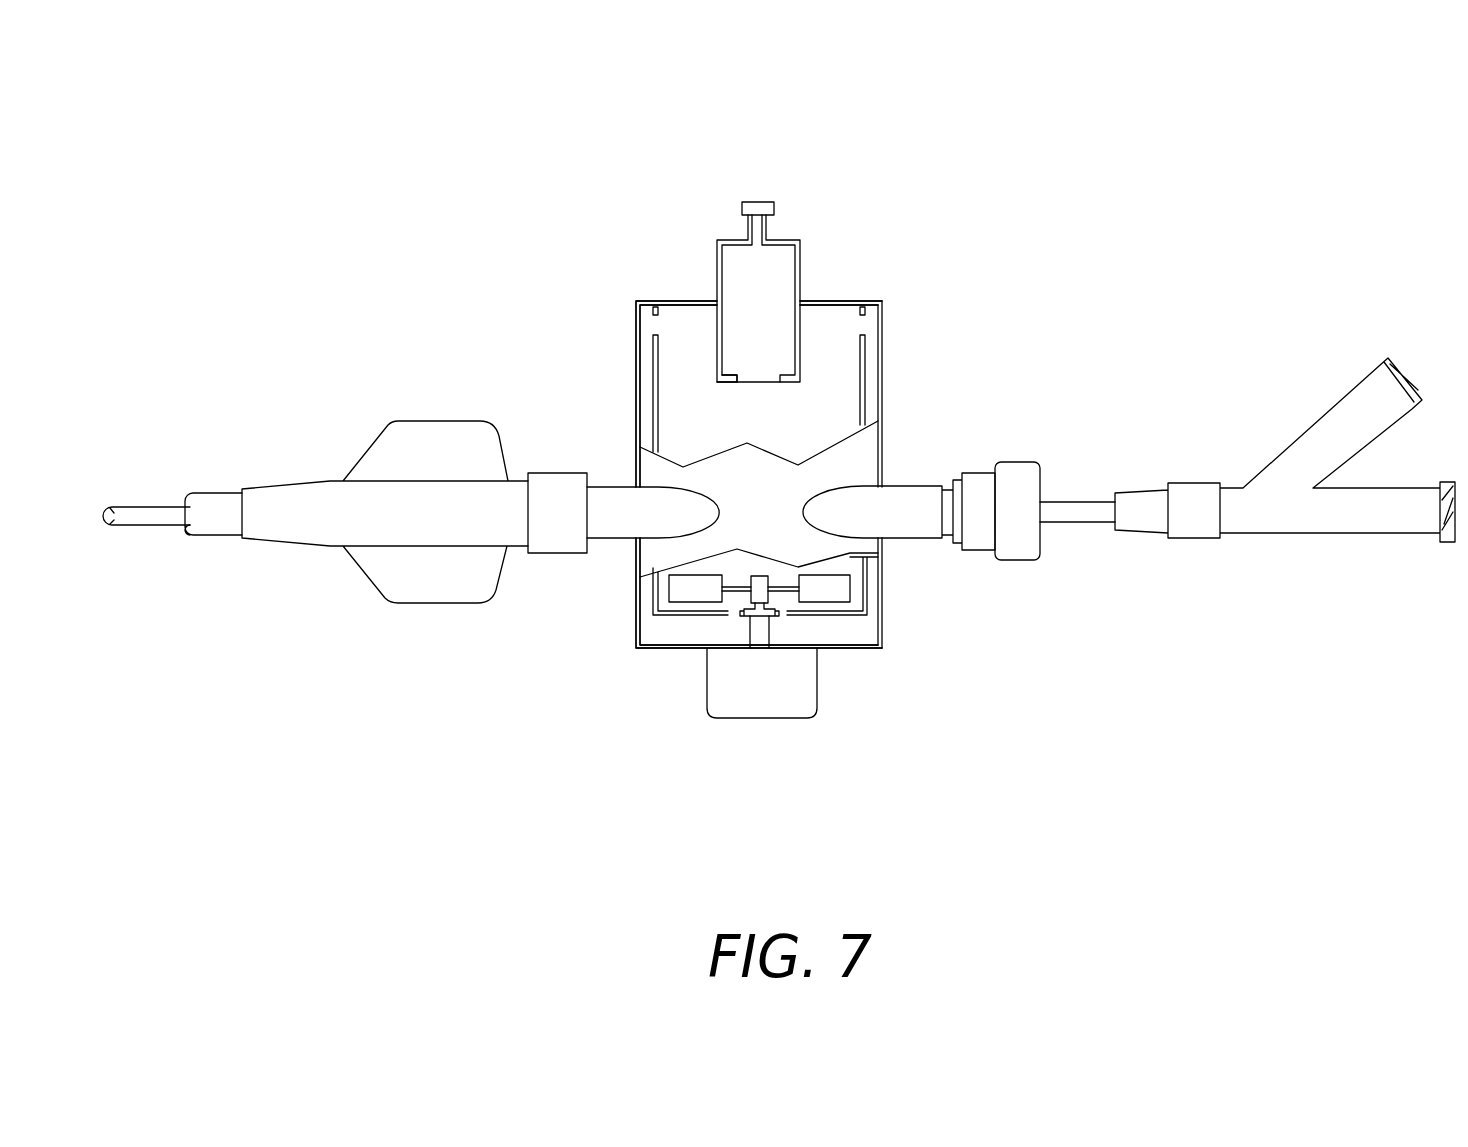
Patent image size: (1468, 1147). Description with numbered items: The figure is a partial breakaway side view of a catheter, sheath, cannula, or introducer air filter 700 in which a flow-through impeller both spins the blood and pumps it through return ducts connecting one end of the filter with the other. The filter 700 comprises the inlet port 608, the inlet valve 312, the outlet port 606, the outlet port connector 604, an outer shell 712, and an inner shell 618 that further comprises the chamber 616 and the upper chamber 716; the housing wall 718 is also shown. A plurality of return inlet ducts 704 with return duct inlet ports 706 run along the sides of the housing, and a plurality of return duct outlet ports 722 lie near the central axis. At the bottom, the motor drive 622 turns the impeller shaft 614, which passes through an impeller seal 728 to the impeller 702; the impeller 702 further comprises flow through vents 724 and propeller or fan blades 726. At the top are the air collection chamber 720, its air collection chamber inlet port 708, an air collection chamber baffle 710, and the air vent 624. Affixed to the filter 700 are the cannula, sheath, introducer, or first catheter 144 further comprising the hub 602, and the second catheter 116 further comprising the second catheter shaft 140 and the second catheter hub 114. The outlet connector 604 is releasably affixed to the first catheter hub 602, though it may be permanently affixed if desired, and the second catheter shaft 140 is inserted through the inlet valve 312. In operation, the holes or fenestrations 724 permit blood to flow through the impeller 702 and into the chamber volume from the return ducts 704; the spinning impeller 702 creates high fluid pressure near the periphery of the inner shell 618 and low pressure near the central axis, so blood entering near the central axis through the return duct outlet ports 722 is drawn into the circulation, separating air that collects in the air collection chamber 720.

The air filter 700 is at (480, 253).
The upper chamber 716 is at (825, 338).
The housing wall 718 is at (882, 403).
The outer shell 712 is at (867, 477).
The air collection chamber 720 is at (777, 275).
The air vent 624 is at (760, 203).
The air collection chamber inlet port 708 is at (760, 377).
The air collection chamber baffle 710 is at (730, 375).
The chamber 616 is at (730, 410).
The return duct inlet ports 706 is at (655, 318).
The return inlet ducts 704 is at (648, 372).
The outlet port 606 is at (650, 520).
The inlet port 608 is at (905, 515).
The inlet valve 312 is at (1022, 485).
The second catheter 116 is at (1069, 512).
The second catheter hub 114 is at (1343, 430).
The first catheter 144 is at (222, 518).
The second catheter shaft 140 is at (147, 517).
The hub 602 is at (432, 493).
The outlet port connector 604 is at (572, 507).
The return duct outlet ports 722 is at (787, 613).
The impeller 702 is at (692, 586).
The inner shell 618 is at (865, 587).
The flow through vents 724 is at (732, 582).
The propeller or fan blades 726 is at (740, 592).
The impeller shaft 614 is at (760, 605).
The impeller seal 728 is at (758, 640).
The motor drive 622 is at (778, 693).